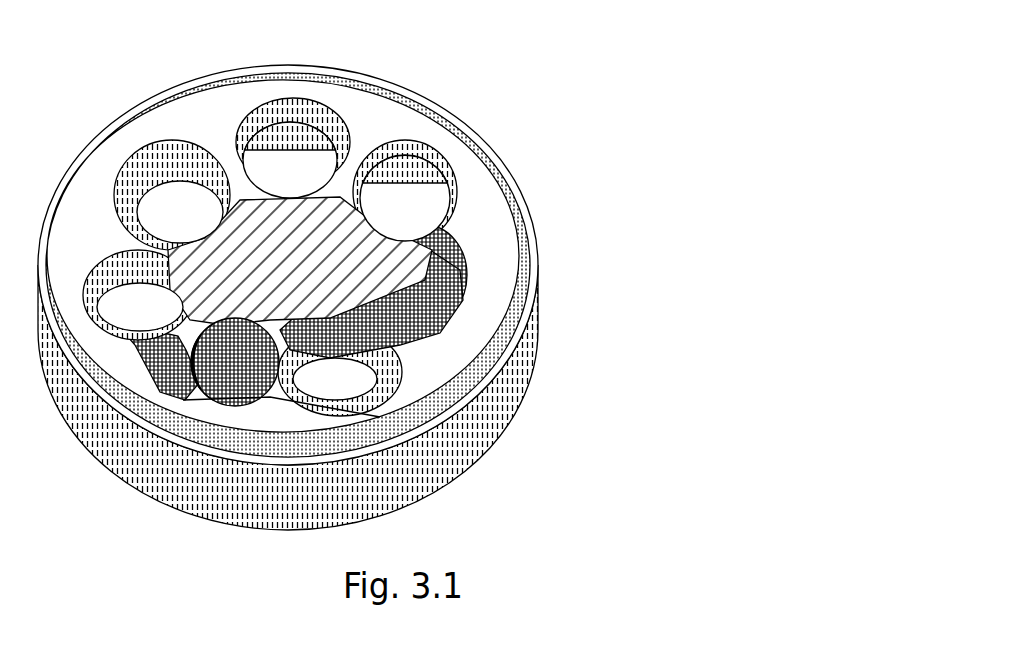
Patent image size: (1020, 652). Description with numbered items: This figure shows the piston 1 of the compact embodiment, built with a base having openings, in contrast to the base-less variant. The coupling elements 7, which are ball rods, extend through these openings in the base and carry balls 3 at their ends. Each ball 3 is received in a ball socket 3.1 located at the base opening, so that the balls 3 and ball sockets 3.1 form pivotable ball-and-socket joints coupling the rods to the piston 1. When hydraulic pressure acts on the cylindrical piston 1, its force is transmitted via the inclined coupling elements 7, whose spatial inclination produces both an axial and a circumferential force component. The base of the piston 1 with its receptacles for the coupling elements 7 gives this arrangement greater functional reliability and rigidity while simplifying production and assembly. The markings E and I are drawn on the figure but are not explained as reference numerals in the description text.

The piston 1 is at (537, 101).
The ball 3 is at (268, 396).
The ball socket 3.1 is at (268, 396).
The coupling element 7 is at (410, 251).
The plane surface E is at (333, 272).
The inner bore surface I is at (405, 232).